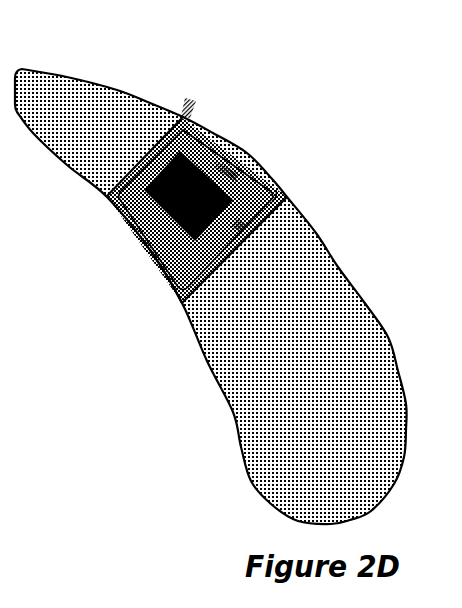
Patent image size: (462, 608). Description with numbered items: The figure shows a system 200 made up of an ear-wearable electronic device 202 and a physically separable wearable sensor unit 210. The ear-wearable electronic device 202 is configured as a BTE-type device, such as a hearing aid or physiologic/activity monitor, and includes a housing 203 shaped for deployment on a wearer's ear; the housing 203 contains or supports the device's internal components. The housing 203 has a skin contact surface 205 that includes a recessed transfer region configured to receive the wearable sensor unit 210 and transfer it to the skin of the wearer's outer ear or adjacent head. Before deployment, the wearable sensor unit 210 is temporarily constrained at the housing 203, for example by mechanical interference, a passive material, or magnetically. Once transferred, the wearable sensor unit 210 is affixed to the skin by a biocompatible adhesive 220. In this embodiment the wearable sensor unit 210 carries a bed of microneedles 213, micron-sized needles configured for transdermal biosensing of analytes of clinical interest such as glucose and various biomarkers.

The system 200 is at (86, 236).
The ear-wearable electronic device 202 is at (348, 332).
The housing 203 is at (233, 381).
The skin contact surface 205 is at (268, 316).
The wearable sensor unit 210 is at (191, 100).
The microneedles 213 is at (247, 152).
The biocompatible adhesive 220 is at (291, 188).